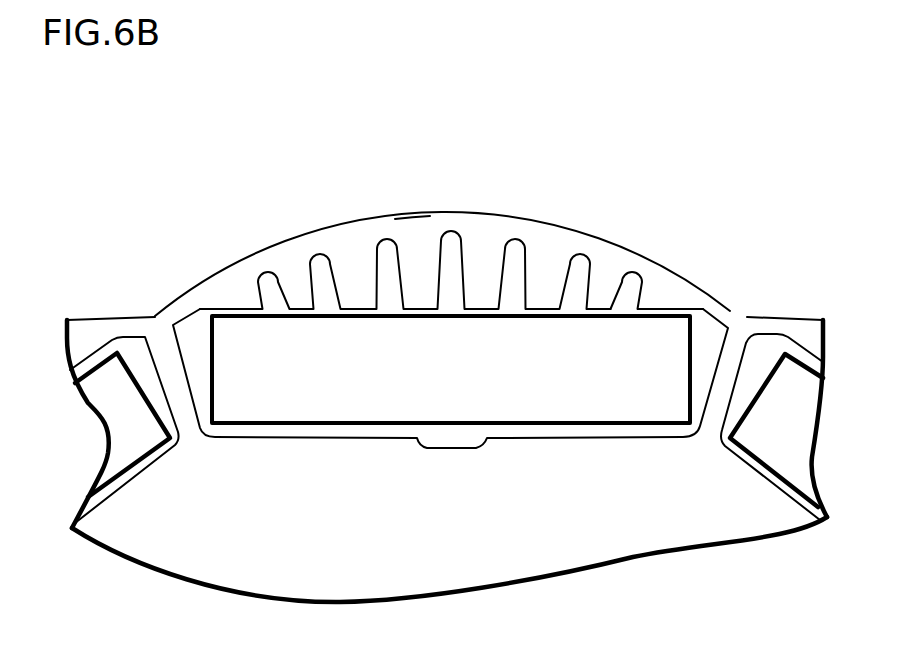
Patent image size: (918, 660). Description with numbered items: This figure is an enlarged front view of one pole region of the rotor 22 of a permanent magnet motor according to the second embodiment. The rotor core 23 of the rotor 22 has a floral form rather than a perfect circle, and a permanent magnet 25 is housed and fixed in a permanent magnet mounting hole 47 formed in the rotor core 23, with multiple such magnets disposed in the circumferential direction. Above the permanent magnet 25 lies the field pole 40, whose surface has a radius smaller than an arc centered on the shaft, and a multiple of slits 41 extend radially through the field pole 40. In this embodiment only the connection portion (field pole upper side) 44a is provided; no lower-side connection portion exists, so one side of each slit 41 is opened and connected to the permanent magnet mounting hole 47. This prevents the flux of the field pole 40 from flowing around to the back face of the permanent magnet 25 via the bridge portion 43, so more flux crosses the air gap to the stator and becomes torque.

The rotor 22 is at (464, 203).
The rotor core 23 is at (354, 228).
The permanent magnet 25 is at (650, 395).
The field pole 40 is at (570, 238).
The slit 41 is at (633, 288).
The bridge portion 43 is at (740, 337).
The connection portion (field pole upper side) 44a is at (411, 228).
The permanent magnet mounting hole 47 is at (217, 308).